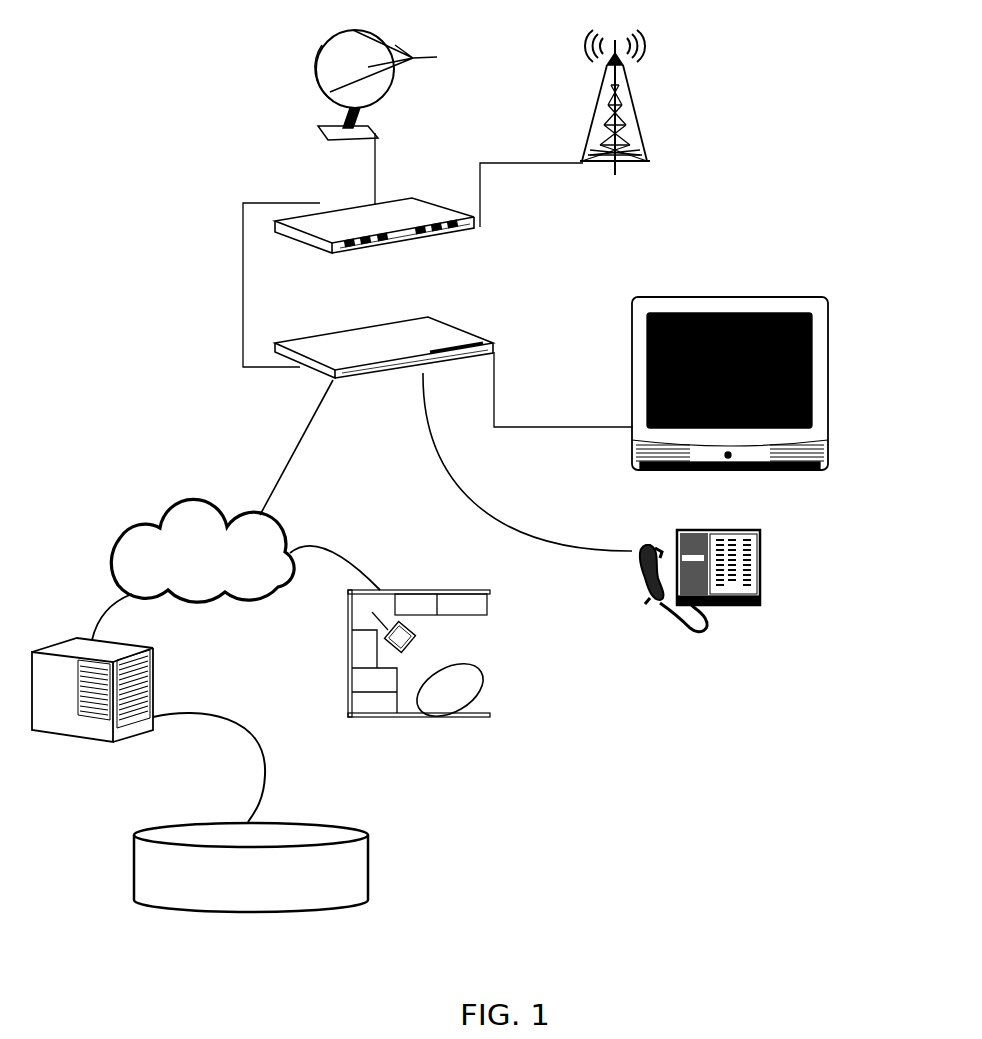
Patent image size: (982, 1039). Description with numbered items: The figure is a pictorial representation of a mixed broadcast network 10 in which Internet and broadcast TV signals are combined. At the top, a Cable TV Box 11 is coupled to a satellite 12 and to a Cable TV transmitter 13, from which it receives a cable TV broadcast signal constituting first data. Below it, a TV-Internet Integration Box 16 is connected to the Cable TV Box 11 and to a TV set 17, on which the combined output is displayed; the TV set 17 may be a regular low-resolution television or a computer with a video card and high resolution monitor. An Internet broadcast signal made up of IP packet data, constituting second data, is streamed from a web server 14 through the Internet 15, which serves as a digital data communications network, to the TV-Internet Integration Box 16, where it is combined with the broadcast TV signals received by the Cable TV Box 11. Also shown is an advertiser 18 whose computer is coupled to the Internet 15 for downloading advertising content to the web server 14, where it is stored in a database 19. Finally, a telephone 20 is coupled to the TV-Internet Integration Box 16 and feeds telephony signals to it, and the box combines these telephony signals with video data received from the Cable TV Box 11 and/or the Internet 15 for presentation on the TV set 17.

The mixed broadcast network 10 is at (657, 737).
The Cable TV Box 11 is at (474, 230).
The satellite 12 is at (393, 92).
The Cable TV transmitter 13 is at (640, 125).
The web server 14 is at (155, 682).
The Internet 15 is at (228, 597).
The TV-Internet Integration Box 16 is at (475, 337).
The TV set 17 is at (827, 412).
The advertiser 18 is at (485, 718).
The database 19 is at (368, 890).
The telephone 20 is at (757, 572).